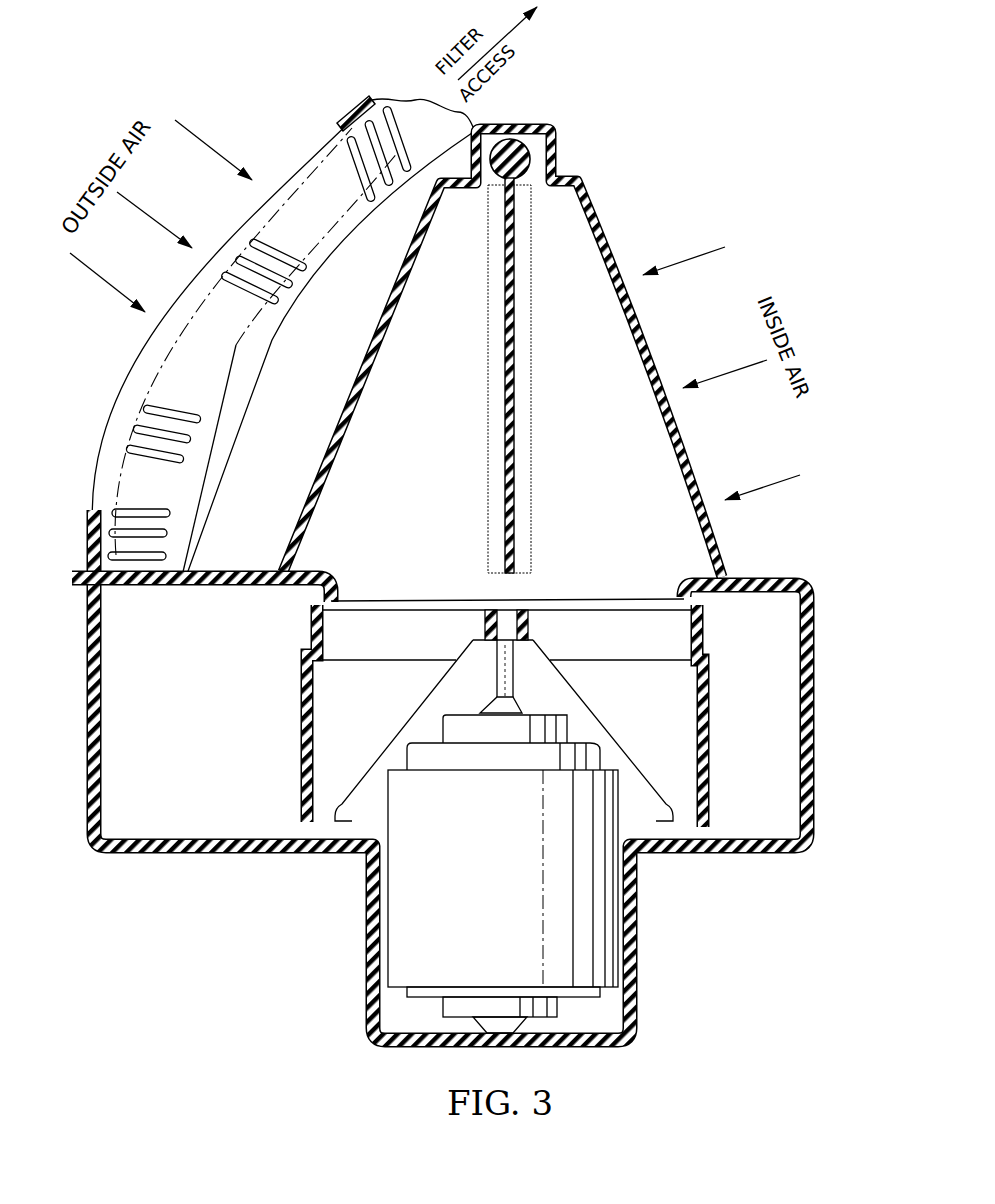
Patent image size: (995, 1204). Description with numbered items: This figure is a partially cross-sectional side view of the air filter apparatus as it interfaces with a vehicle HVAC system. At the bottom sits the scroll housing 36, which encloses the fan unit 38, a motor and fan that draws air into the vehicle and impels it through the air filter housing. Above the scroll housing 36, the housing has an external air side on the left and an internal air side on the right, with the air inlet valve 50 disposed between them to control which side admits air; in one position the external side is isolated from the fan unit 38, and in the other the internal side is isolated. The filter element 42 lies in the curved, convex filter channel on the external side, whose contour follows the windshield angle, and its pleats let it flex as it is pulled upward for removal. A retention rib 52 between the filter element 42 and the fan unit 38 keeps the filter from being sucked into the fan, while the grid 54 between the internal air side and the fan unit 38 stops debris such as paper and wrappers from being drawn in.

The scroll housing 36 is at (87, 813).
The fan unit 38 is at (417, 953).
The filter element 42 is at (288, 262).
The air inlet valve 50 is at (528, 150).
The retention rib 52 is at (263, 437).
The grid 54 is at (614, 255).